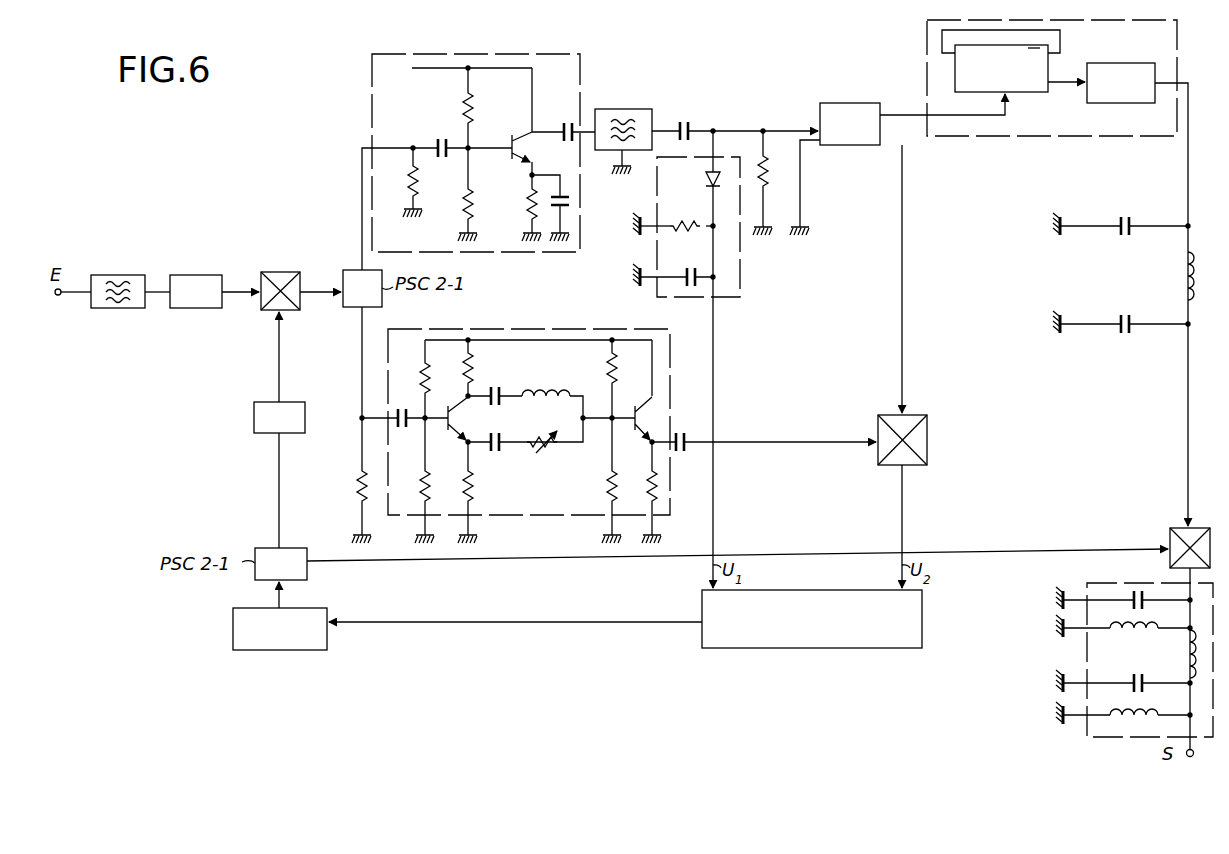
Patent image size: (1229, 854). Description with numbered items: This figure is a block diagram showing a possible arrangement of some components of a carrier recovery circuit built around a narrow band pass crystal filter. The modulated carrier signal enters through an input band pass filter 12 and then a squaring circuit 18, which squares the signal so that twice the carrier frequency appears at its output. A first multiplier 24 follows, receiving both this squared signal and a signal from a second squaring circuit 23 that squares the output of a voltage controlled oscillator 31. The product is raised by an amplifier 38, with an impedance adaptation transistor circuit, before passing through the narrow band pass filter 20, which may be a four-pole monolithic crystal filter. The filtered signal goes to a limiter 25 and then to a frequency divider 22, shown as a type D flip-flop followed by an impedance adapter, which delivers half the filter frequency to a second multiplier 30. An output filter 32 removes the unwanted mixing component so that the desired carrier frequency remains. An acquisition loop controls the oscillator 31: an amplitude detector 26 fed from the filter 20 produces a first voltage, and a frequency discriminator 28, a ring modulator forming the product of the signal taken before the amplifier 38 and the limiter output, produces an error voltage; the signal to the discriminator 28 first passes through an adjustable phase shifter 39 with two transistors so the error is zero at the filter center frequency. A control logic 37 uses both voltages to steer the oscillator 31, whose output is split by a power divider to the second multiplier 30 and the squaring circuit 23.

The input band pass filter 12 is at (127, 265).
The squaring circuit 18 is at (194, 275).
The first multiplier 24 is at (280, 272).
The narrow band pass filter 20 is at (621, 109).
The limiter 25 is at (847, 103).
The frequency divider 22 is at (927, 47).
The amplitude detector 26 is at (740, 288).
The frequency discriminator 28 is at (930, 425).
The second multiplier 30 is at (1172, 530).
The filter 32 is at (1087, 660).
The voltage controlled oscillator 31 is at (233, 628).
The second squaring circuit 23 is at (254, 418).
The control logic 37 is at (702, 605).
The amplifier 38 is at (373, 93).
The adjustable phase shifter 39 is at (527, 515).